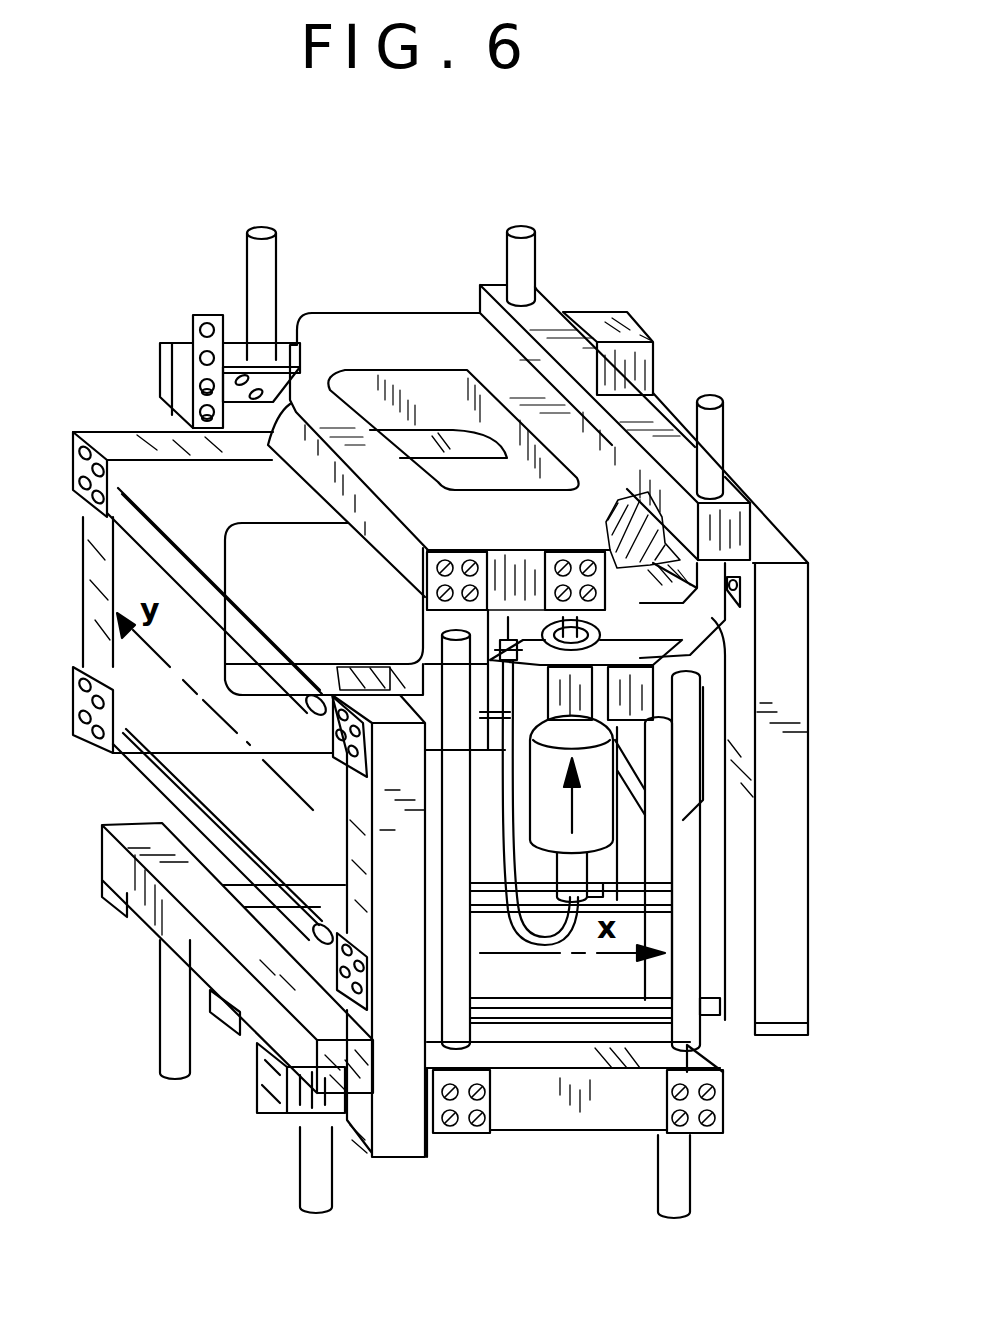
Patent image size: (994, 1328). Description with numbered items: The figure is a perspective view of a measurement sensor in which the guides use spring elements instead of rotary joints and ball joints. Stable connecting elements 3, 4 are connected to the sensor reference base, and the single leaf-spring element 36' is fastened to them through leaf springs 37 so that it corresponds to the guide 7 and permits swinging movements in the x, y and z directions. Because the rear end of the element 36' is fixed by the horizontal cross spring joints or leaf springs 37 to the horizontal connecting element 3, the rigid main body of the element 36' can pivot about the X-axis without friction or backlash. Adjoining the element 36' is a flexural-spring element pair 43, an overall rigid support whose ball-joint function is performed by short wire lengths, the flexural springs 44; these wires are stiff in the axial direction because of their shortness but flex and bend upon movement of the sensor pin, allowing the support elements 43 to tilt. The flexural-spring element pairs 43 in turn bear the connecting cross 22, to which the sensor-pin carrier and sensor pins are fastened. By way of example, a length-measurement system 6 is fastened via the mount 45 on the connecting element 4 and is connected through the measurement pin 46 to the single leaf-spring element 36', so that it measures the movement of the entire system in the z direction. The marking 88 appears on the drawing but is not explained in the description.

The mounting block 3 is at (160, 372).
The support bar 4 is at (560, 302).
The motor 6 is at (593, 817).
The frame 7 is at (100, 427).
The base bars 22 is at (257, 1013).
The top plate with opening 36' is at (474, 423).
The mounting strip with holes 37 is at (237, 347).
The guide rods 43 is at (247, 613).
The bearing blocks 44 is at (125, 492).
The side plate 45 is at (713, 617).
The nut 46 is at (600, 622).
The fastening screws 88 is at (776, 551).